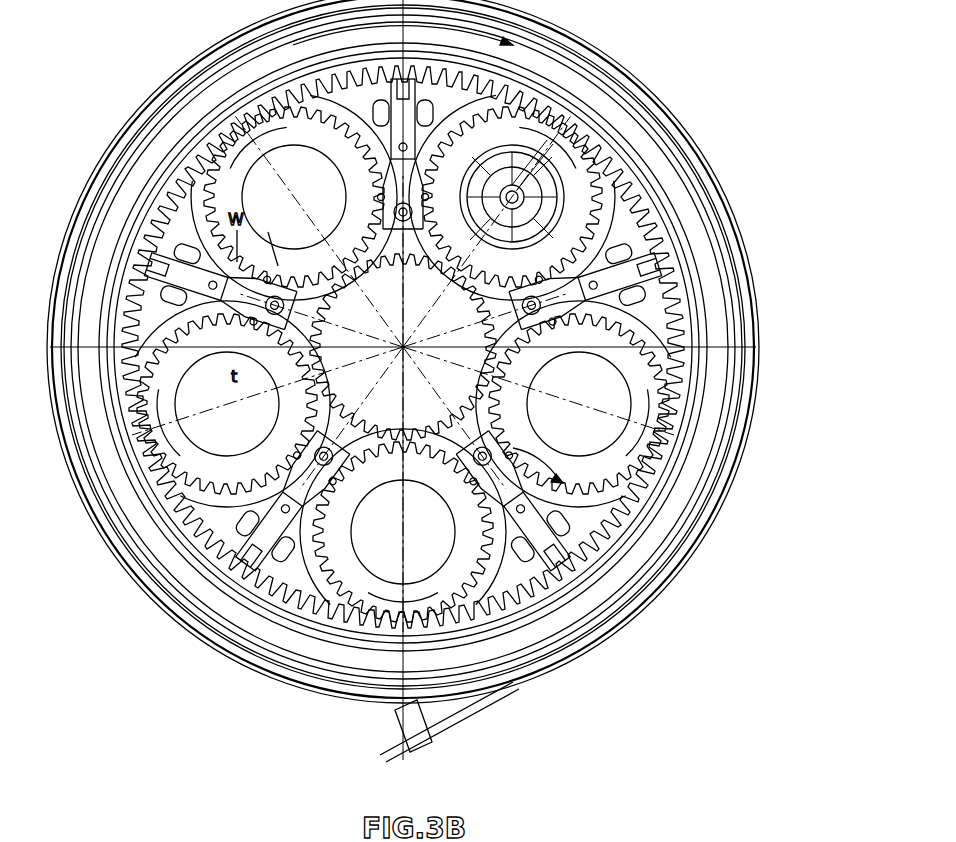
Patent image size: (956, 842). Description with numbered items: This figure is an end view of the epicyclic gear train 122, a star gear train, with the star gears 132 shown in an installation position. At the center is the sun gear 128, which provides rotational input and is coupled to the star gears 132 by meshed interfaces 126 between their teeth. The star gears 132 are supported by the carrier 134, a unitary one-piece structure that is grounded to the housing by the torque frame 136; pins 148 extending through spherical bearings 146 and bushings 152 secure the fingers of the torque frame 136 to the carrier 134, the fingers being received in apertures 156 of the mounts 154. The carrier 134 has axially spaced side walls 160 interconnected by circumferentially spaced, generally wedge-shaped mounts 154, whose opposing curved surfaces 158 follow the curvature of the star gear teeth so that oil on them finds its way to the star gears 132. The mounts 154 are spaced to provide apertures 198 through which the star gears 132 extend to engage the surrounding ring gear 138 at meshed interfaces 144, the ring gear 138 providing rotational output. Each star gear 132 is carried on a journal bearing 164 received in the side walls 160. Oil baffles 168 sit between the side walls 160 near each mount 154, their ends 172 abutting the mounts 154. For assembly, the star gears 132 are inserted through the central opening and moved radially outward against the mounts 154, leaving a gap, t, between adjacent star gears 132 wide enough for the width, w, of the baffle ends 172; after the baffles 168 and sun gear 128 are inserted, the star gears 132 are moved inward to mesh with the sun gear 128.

The epicyclic gear train 122 is at (712, 72).
The meshed interfaces 126 is at (527, 413).
The sun gear 128 is at (444, 421).
The star gears 132 is at (640, 427).
The carrier 134 is at (327, 608).
The torque frame 136 is at (608, 535).
The ring gear 138 is at (527, 100).
The meshed interfaces 144 is at (676, 390).
The spherical bearings 146 is at (556, 625).
The pins 148 is at (585, 575).
The bushings 152 is at (545, 505).
The mounts 154 is at (152, 578).
The apertures 156 is at (178, 620).
The curved surfaces 158 is at (222, 441).
The side walls 160 is at (495, 688).
The journal bearing 164 is at (405, 559).
The oil baffles 168 is at (403, 532).
The ends 172 is at (176, 394).
The apertures 198 is at (622, 488).